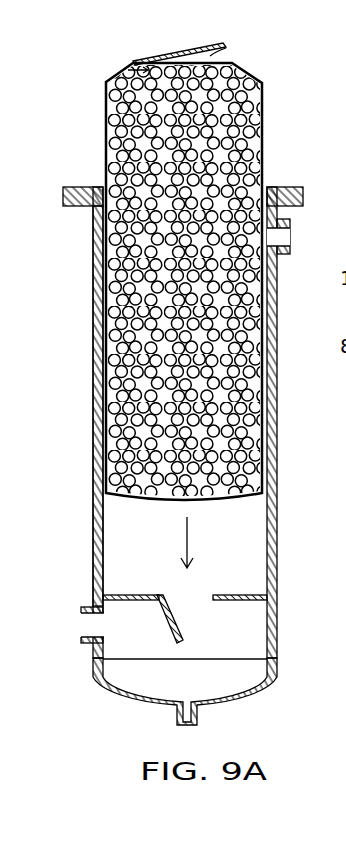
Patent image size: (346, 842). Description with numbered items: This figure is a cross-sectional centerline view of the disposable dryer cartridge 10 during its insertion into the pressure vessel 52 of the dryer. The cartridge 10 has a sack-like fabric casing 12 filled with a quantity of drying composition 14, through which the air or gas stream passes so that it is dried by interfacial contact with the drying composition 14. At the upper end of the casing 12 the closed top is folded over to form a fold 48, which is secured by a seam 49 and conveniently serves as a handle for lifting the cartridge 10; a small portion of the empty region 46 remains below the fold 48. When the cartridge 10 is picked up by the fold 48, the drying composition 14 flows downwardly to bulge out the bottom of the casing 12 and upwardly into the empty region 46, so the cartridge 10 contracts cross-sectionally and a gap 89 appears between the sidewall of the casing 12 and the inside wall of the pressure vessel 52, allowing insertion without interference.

The disposable dryer cartridge 10 is at (287, 90).
The fabric casing 12 is at (264, 144).
The drying composition 14 is at (106, 147).
The empty region 46 is at (133, 63).
The fold 48 is at (163, 53).
The seam 49 is at (226, 47).
The pressure vessel 52 is at (278, 333).
The gap 89 is at (96, 284).